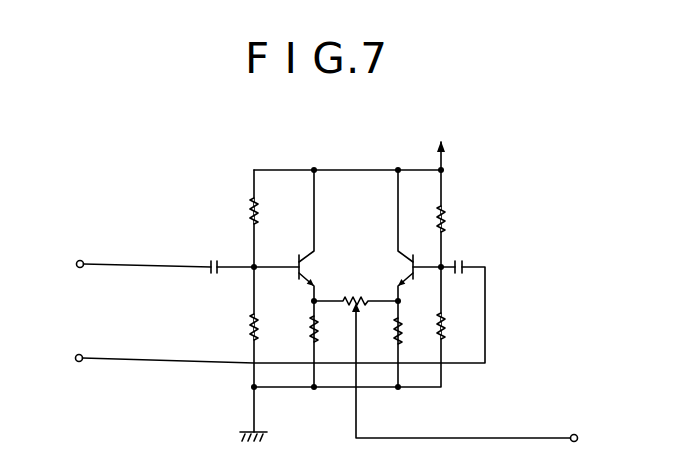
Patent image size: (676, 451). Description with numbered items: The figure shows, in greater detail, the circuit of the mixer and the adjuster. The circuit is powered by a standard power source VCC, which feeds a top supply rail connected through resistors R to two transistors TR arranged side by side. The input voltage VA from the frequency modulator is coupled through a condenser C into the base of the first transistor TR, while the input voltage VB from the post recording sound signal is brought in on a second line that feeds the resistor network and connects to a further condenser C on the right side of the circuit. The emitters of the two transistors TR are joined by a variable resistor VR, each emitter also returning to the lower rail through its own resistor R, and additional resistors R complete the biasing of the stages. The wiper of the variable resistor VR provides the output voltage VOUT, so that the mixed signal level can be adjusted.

The resistor R is at (354, 276).
The condenser C is at (338, 249).
The transistor TR is at (347, 278).
The variable resistor VR is at (442, 349).
The input voltage from the frequency modulator VA is at (131, 267).
The input voltage from the post recording sound signal VB is at (268, 325).
The standard power source VCC is at (443, 132).
The output voltage VOUT is at (586, 421).